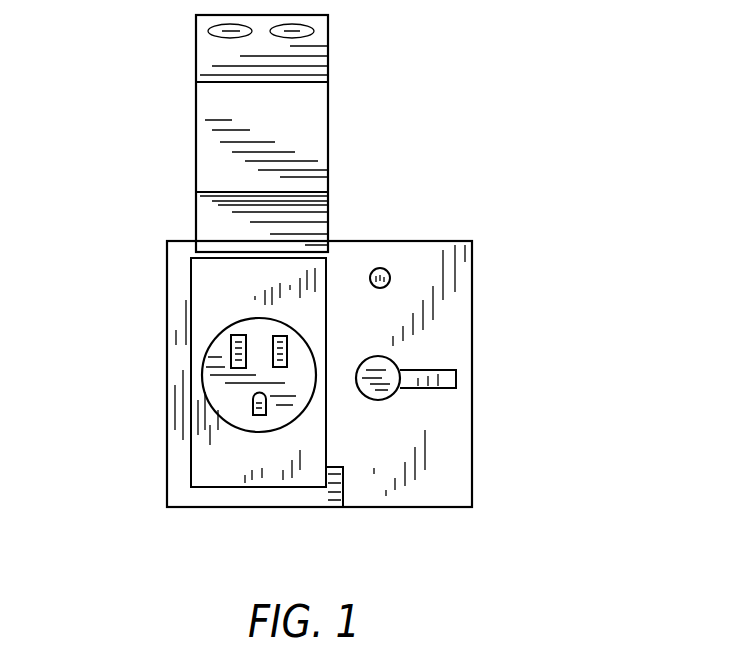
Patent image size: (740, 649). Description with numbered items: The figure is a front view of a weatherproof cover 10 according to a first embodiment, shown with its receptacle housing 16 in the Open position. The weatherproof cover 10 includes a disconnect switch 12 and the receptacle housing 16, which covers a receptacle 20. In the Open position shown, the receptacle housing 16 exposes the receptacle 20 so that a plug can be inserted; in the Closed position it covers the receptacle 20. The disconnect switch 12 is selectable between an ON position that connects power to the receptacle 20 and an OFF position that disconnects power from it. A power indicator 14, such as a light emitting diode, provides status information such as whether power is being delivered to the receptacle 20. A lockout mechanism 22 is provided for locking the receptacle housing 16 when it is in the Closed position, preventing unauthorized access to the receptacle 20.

The weatherproof cover 10 is at (50, 30).
The disconnect switch 12 is at (455, 372).
The power indicator 14 is at (392, 273).
The receptacle housing 16 is at (192, 126).
The receptacle 20 is at (235, 328).
The lockout mechanism 22 is at (337, 508).